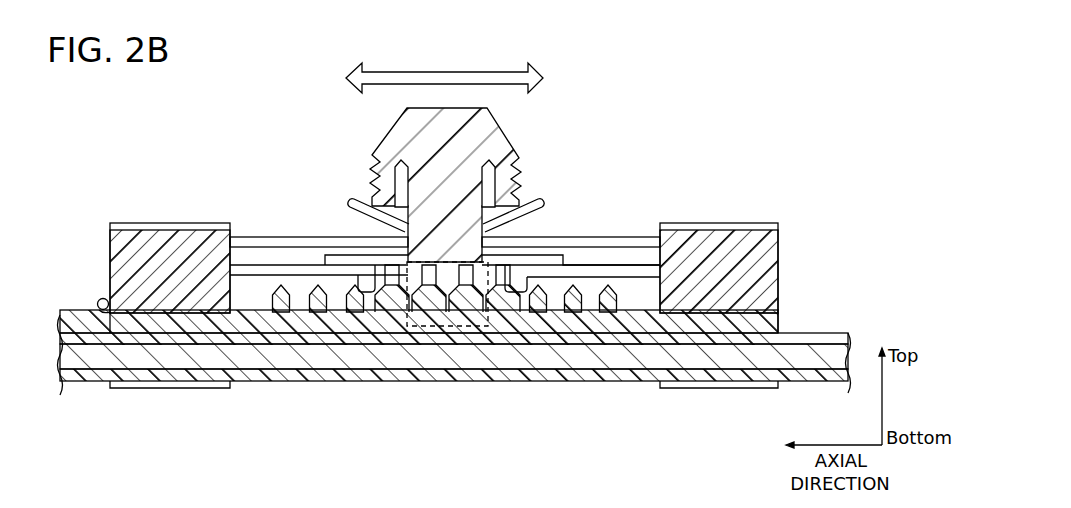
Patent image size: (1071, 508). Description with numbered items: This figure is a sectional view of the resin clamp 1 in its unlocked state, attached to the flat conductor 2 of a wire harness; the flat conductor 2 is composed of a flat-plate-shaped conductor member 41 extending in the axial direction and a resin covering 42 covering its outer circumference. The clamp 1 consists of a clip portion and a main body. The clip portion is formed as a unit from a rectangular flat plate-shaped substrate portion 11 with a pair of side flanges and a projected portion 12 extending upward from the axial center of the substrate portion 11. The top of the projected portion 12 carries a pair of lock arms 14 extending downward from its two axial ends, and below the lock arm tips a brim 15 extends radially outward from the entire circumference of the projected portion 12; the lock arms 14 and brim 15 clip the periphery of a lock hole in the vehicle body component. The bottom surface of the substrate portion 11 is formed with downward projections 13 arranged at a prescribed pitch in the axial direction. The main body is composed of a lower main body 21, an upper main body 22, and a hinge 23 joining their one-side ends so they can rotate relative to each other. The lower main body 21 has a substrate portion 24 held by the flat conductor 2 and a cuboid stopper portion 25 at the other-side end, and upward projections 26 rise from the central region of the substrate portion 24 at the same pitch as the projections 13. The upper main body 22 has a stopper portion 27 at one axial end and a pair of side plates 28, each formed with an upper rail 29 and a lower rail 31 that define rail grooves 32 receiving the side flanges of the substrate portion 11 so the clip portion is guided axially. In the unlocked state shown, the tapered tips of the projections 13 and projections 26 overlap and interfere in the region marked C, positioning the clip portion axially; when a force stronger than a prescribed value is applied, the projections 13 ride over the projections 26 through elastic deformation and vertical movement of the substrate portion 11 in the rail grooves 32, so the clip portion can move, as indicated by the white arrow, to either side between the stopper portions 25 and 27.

The clamp 1 is at (462, 168).
The flat conductor 2 is at (462, 302).
The substrate portion 11 is at (552, 262).
The projected portion 12 is at (447, 160).
The projections 13 is at (444, 290).
The lock arms 14 is at (409, 142).
The brim 15 is at (533, 200).
The lower main body 21 is at (258, 336).
The upper main body 22 is at (263, 238).
The hinge 23 is at (99, 300).
The substrate portion 24 is at (453, 371).
The stopper portion 25 is at (722, 247).
The projections 26 is at (471, 306).
The stopper portion 27 is at (166, 236).
The side plates 28 is at (319, 193).
The upper rail 29 is at (614, 248).
The lower rail 31 is at (635, 268).
The rail grooves 32 is at (596, 257).
The conductor member 41 is at (792, 355).
The resin covering 42 is at (817, 336).
The part C is at (453, 327).